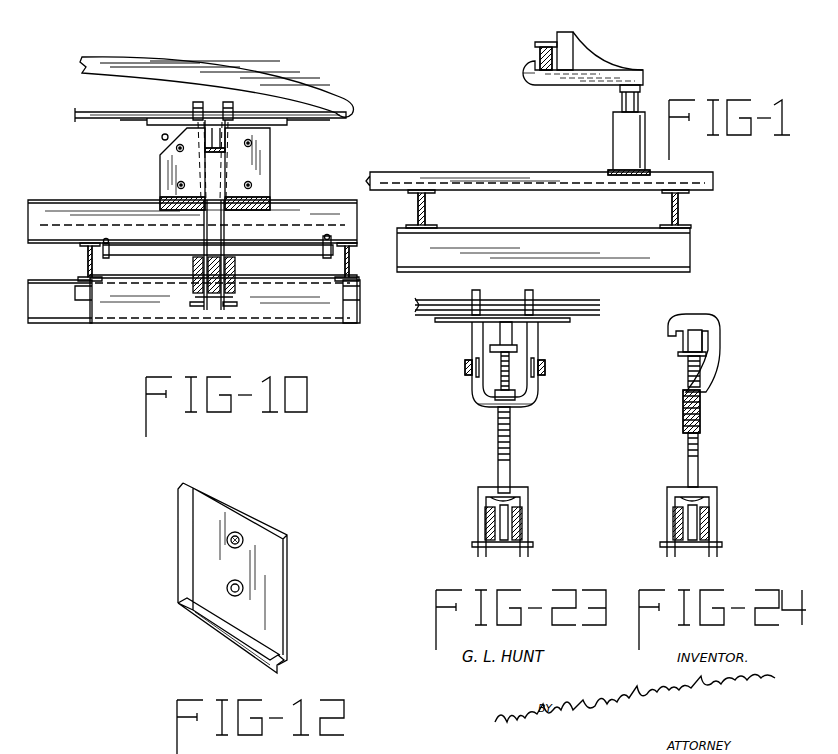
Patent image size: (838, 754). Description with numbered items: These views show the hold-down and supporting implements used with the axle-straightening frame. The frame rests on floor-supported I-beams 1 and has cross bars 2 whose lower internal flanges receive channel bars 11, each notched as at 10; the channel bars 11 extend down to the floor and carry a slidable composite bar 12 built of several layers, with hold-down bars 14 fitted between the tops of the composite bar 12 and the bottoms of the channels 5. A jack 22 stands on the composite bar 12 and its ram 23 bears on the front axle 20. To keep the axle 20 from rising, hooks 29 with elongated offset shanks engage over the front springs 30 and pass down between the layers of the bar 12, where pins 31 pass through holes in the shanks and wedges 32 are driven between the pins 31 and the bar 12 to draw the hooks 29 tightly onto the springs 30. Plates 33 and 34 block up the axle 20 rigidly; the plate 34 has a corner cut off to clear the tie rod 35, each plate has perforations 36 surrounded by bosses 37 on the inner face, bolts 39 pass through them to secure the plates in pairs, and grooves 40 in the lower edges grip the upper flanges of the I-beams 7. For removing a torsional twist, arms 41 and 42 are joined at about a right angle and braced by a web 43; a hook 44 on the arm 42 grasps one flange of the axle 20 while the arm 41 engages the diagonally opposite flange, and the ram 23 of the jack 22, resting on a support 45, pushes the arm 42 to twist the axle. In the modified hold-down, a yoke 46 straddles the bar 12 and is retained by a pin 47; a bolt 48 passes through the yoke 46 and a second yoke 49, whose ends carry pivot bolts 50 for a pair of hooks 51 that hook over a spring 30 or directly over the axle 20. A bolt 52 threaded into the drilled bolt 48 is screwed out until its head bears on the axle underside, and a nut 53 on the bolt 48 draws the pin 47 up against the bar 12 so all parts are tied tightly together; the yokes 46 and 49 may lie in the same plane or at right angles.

In FIG. 11, the I-beams 1 is at (680, 252).
In FIG. 10, the cross bars 2 is at (86, 262).
In FIG. 11, the cross bars 2 is at (426, 208).
In FIG. 11, the channels 5 is at (544, 172).
In FIG. 10, the I-beams 7 is at (358, 211).
In FIG. 10, the notch 10 is at (80, 293).
In FIG. 10, the channel bars 11 is at (271, 302).
In FIG. 10, the composite bar 12 is at (193, 262).
In FIG. 23, the composite bar 12 is at (514, 520).
In FIG. 24, the composite bar 12 is at (703, 518).
In FIG. 10, the hold-down bars 14 is at (308, 250).
In FIG. 10, the front axle 20 is at (222, 140).
In FIG. 11, the front axle 20 is at (538, 50).
In FIG. 23, the front axle 20 is at (500, 333).
In FIG. 24, the front axle 20 is at (688, 336).
In FIG. 11, the jack 22 is at (620, 140).
In FIG. 11, the ram 23 is at (632, 98).
In FIG. 10, the hooks 29 is at (225, 102).
In FIG. 10, the front springs 30 is at (286, 122).
In FIG. 23, the front springs 30 is at (585, 316).
In FIG. 10, the pins 31 is at (232, 306).
In FIG. 10, the wedges 32 is at (190, 300).
In FIG. 10, the plate 33 is at (258, 176).
In FIG. 12, the plate 33 is at (277, 559).
In FIG. 10, the plate 34 is at (166, 165).
In FIG. 10, the tie rod 35 is at (161, 137).
In FIG. 12, the perforations 36 is at (243, 535).
In FIG. 12, the bosses 37 is at (236, 530).
In FIG. 10, the bolts 39 is at (177, 186).
In FIG. 12, the grooves 40 is at (282, 660).
In FIG. 11, the arm 41 is at (570, 45).
In FIG. 11, the arm 42 is at (580, 85).
In FIG. 11, the web 43 is at (590, 58).
In FIG. 11, the hook 44 is at (526, 71).
In FIG. 11, the support 45 is at (558, 185).
In FIG. 23, the yoke 46 is at (526, 500).
In FIG. 24, the yoke 46 is at (716, 500).
In FIG. 23, the pin 47 is at (530, 542).
In FIG. 24, the pin 47 is at (720, 543).
In FIG. 23, the bolt 48 is at (510, 468).
In FIG. 24, the bolt 48 is at (698, 470).
In FIG. 23, the second yoke 49 is at (534, 402).
In FIG. 24, the second yoke 49 is at (700, 410).
In FIG. 23, the pivot bolts 50 is at (465, 367).
In FIG. 23, the hooks 51 is at (472, 330).
In FIG. 24, the hooks 51 is at (716, 330).
In FIG. 23, the bolt 52 is at (501, 375).
In FIG. 24, the bolt 52 is at (688, 365).
In FIG. 23, the nut 53 is at (496, 396).